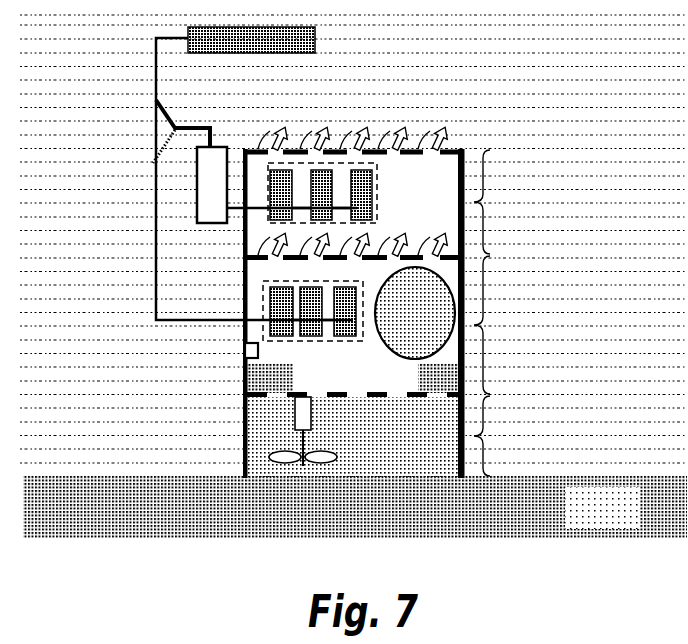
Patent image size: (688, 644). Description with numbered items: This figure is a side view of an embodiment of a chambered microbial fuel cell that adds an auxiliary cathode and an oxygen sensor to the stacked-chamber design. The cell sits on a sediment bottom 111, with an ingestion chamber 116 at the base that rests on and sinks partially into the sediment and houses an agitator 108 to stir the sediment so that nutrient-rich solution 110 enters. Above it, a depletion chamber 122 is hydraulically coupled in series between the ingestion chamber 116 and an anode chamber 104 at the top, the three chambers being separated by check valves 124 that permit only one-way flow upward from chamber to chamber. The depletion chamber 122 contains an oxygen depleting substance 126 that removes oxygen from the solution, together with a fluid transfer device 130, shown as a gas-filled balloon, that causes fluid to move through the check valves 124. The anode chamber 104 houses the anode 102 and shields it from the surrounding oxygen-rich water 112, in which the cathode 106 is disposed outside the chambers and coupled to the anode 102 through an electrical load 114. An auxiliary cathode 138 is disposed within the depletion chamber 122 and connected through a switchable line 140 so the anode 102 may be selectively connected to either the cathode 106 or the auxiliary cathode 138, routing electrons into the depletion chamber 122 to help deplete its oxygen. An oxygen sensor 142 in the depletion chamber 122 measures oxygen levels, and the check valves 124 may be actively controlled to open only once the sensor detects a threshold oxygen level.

The anode 102 is at (377, 175).
The anode chamber 104 is at (506, 202).
The cathode 106 is at (315, 40).
The agitator 108 is at (313, 450).
The nutrient-rich solution 110 is at (439, 466).
The sediment bottom 111 is at (623, 522).
The oxygen-rich water 112 is at (636, 103).
The electrical load 114 is at (212, 226).
The ingestion chamber 116 is at (509, 436).
The depletion chamber 122 is at (508, 325).
The check valves 124 is at (494, 146).
The oxygen depleting substance 126 is at (245, 385).
The fluid transfer device 130 is at (438, 324).
The auxiliary cathode 138 is at (314, 341).
The switchable line 140 is at (156, 262).
The oxygen sensor 142 is at (245, 352).